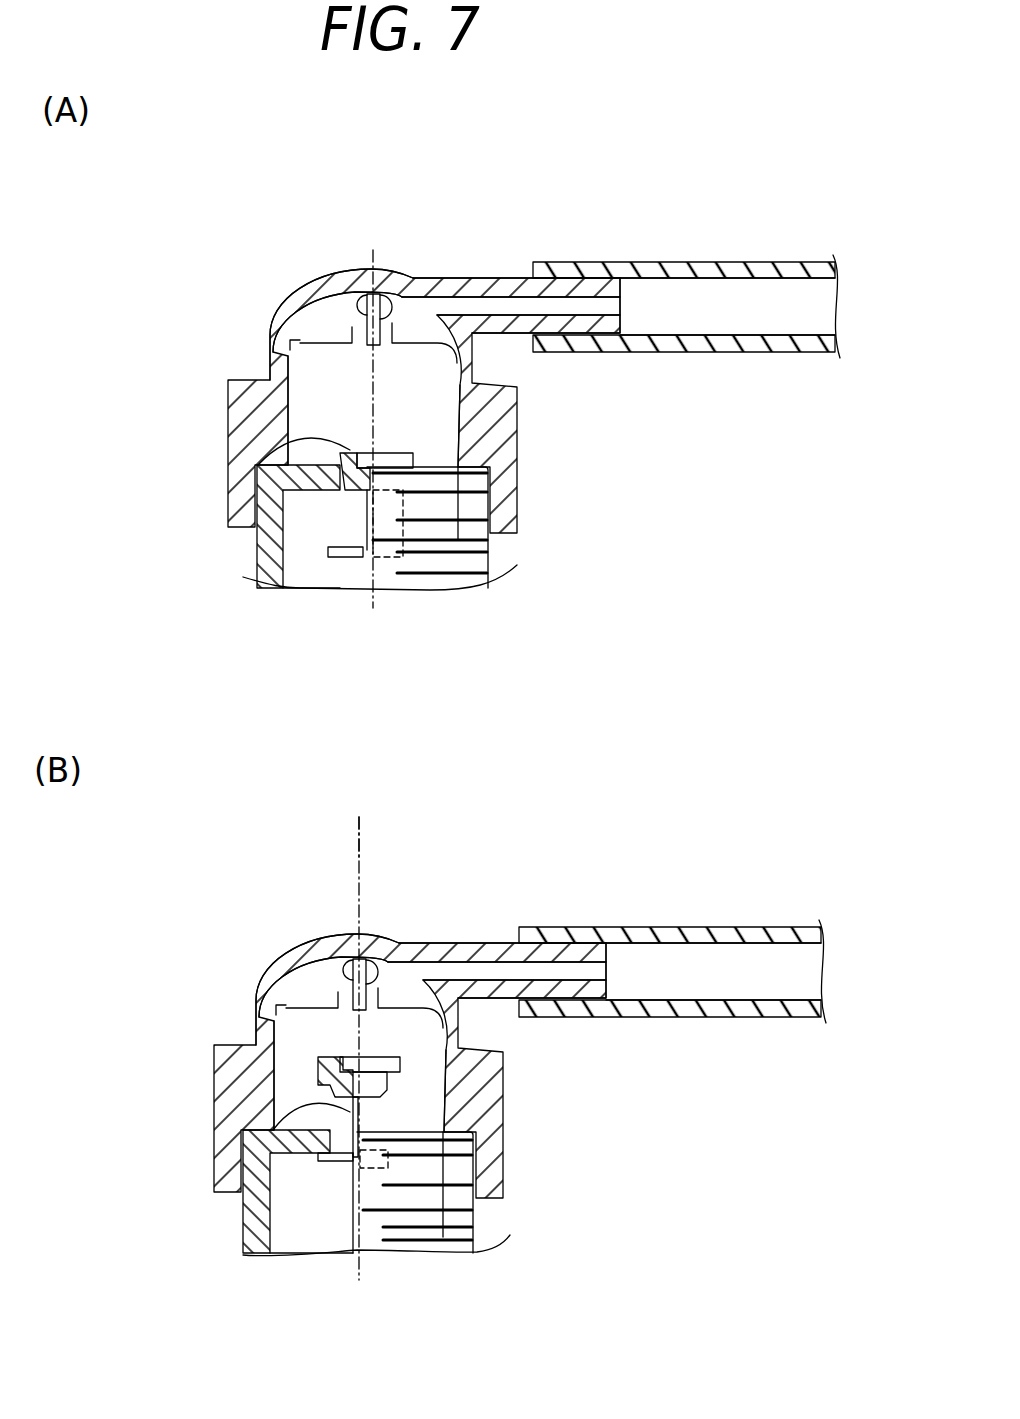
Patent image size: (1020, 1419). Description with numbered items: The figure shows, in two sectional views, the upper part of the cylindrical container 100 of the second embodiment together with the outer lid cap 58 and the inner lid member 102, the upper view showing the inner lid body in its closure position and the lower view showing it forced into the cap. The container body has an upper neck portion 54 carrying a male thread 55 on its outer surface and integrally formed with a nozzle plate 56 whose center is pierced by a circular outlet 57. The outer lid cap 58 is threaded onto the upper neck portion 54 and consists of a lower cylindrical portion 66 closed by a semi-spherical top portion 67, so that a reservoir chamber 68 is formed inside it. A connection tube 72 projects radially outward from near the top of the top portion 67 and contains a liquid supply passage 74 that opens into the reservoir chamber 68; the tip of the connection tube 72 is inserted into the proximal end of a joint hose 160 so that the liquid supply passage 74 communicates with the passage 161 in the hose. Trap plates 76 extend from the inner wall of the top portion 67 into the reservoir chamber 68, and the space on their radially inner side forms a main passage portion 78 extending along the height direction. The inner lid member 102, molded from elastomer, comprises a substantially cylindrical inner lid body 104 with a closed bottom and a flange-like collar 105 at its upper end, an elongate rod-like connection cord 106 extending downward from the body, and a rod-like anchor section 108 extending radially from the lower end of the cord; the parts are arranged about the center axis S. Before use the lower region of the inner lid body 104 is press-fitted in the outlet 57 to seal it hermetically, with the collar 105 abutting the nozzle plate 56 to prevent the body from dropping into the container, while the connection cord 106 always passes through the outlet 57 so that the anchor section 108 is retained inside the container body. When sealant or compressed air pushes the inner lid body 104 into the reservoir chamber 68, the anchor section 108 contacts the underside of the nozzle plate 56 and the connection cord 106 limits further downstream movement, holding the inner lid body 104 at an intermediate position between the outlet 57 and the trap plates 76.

The upper neck portion 54 is at (243, 577).
The male thread 55 is at (517, 565).
The nozzle plate 56 is at (268, 458).
The outlet 57 is at (322, 1170).
The outer lid cap 58 is at (218, 307).
The cylindrical portion 66 is at (520, 470).
The top portion 67 is at (318, 298).
The reservoir chamber 68 is at (360, 386).
The connection tube 72 is at (485, 278).
The liquid supply passage 74 is at (578, 312).
The trap plates 76 is at (355, 292).
The main passage portion 78 is at (390, 318).
The cylindrical container 100 is at (212, 540).
The inner lid member 102 is at (402, 444).
The inner lid body 104 is at (340, 458).
The collar 105 is at (405, 1085).
The connection cord 106 is at (366, 520).
The anchor section 108 is at (347, 557).
The joint hose 160 is at (712, 262).
The passage 161 is at (732, 314).
The center axis S is at (367, 833).